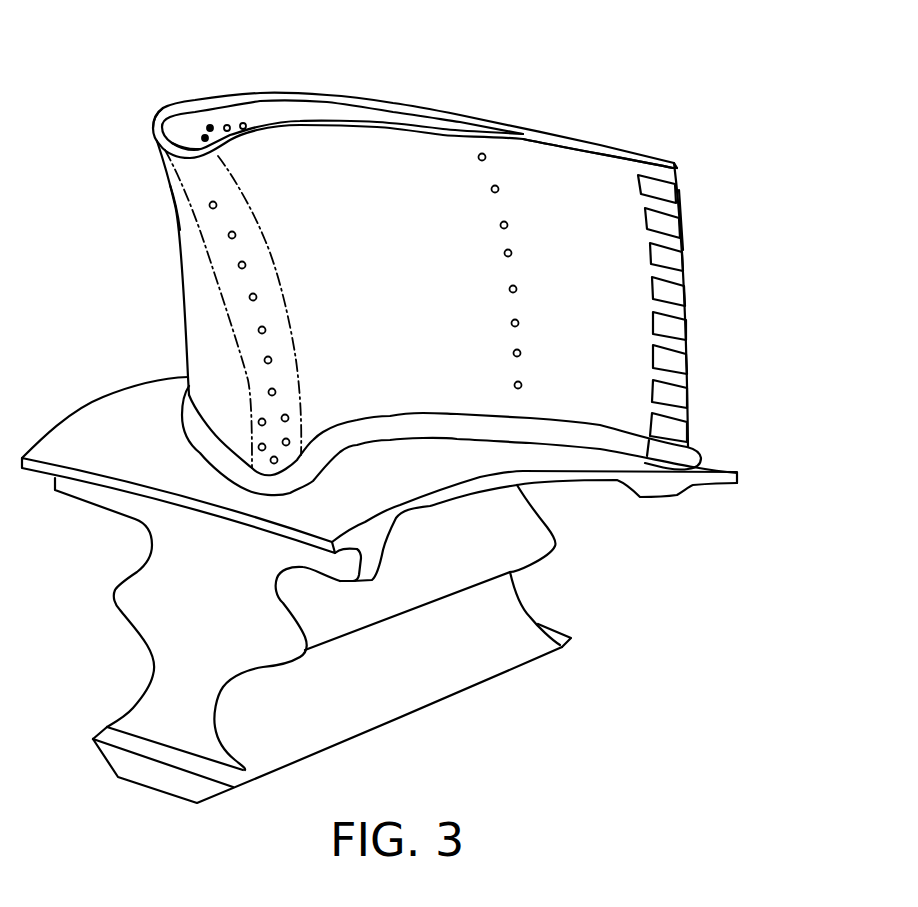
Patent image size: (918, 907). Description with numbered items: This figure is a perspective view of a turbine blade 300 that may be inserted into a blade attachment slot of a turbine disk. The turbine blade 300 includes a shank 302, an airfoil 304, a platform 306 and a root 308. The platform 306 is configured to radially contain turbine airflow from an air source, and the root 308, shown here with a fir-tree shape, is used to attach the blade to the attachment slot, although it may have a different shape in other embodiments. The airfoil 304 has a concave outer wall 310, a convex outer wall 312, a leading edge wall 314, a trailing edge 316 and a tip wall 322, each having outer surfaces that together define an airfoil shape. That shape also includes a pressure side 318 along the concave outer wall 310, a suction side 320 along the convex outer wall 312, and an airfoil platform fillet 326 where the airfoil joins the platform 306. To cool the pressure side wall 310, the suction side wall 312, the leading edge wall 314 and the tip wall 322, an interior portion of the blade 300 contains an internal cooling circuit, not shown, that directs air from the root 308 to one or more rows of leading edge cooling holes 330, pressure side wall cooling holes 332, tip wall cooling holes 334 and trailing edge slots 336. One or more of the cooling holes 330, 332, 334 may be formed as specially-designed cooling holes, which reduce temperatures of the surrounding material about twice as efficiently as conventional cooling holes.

The turbine blade 300 is at (707, 139).
The shank 302 is at (427, 511).
The airfoil 304 is at (470, 312).
The platform 306 is at (415, 482).
The root 308 is at (180, 653).
The concave outer wall 310 is at (394, 170).
The convex outer wall 312 is at (420, 110).
The leading edge wall 314 is at (193, 207).
The trailing edge 316 is at (684, 230).
The pressure side 318 is at (577, 167).
The suction side 320 is at (156, 127).
The tip wall 322 is at (191, 139).
The airfoil platform fillet 326 is at (187, 397).
The leading edge cooling holes 330 is at (240, 264).
The pressure side wall cooling holes 332 is at (510, 254).
The tip wall cooling holes 334 is at (227, 127).
The trailing edge slots 336 is at (678, 333).